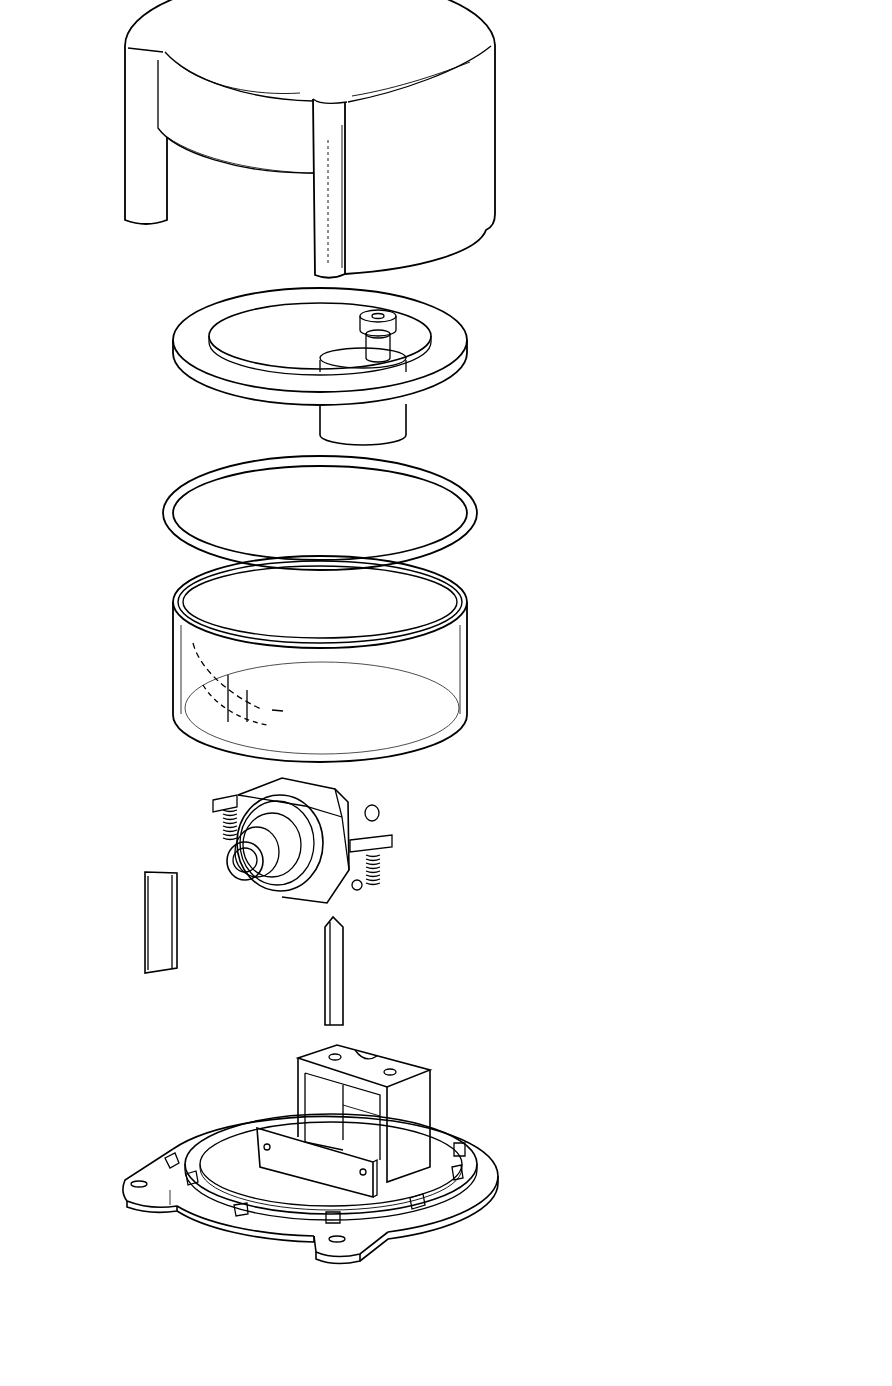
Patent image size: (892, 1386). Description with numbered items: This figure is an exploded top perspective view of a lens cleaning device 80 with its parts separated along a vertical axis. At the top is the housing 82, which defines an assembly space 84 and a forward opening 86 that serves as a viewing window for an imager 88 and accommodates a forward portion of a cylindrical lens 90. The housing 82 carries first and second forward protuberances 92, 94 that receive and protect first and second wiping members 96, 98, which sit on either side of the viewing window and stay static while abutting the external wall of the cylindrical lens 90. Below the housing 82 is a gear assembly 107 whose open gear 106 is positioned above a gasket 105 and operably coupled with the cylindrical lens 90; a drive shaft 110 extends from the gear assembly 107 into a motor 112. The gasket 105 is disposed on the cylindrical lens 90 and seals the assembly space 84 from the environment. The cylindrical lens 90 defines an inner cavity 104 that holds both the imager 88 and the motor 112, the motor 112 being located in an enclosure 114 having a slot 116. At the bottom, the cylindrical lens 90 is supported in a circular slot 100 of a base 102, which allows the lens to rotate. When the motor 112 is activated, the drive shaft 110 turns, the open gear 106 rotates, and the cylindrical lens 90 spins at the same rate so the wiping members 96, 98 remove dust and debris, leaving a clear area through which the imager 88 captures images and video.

The lens cleaning device 80 is at (615, 34).
The housing 82 is at (473, 157).
The assembly space 84 is at (225, 223).
The forward opening 86 is at (180, 160).
The imager 88 is at (352, 798).
The cylindrical lens 90 is at (468, 657).
The first forward protuberance 92 is at (137, 191).
The second forward protuberance 94 is at (315, 275).
The first wiping member 96 is at (143, 917).
The second wiping member 98 is at (332, 975).
The circular slot 100 is at (470, 1160).
The base 102 is at (460, 1220).
The inner cavity 104 is at (420, 603).
The gasket 105 is at (470, 508).
The open gear 106 is at (457, 368).
The gear assembly 107 is at (505, 300).
The drive shaft 110 is at (390, 313).
The motor 112 is at (383, 413).
The enclosure 114 is at (418, 1100).
The slot 116 is at (390, 1072).